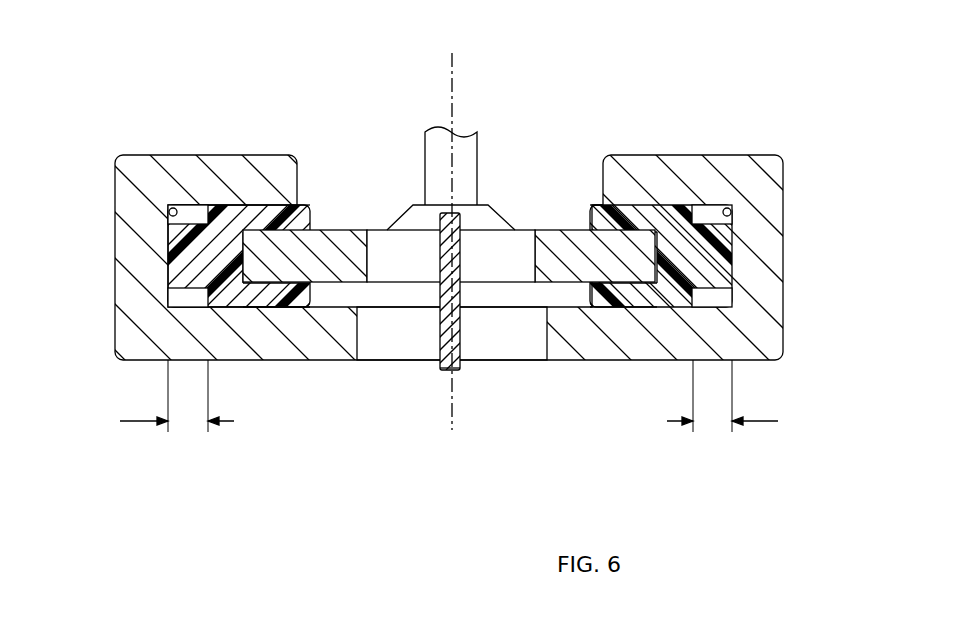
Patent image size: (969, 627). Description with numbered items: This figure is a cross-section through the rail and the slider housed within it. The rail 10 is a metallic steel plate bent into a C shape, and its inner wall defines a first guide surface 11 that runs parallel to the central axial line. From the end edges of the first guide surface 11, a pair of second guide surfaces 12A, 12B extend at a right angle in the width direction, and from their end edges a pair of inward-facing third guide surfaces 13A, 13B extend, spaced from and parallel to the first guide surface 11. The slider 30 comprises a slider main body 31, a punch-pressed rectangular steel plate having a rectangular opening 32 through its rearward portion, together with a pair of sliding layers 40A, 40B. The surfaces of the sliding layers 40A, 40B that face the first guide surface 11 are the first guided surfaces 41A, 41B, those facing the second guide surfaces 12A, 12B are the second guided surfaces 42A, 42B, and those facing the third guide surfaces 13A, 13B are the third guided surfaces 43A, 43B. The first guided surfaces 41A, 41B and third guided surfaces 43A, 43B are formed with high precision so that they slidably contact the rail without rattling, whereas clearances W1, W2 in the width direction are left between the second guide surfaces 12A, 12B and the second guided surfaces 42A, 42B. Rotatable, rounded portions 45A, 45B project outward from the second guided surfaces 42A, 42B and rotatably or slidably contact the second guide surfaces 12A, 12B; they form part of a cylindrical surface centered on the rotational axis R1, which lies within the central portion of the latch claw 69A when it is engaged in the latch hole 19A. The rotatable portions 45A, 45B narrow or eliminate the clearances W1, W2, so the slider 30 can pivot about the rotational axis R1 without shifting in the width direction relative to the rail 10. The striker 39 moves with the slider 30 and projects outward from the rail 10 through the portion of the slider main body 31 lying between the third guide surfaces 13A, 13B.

The rail 10 is at (781, 152).
The first guide surface 11 is at (338, 297).
The second guide surface 12A is at (163, 207).
The second guide surface 12B is at (737, 207).
The third guide surface 13A is at (253, 207).
The third guide surface 13B is at (646, 206).
The latch hole 19A is at (548, 336).
The slider 30 is at (568, 296).
The slider main body 31 is at (558, 247).
The opening 32 is at (370, 258).
The striker 39 is at (461, 122).
The sliding layer 40A is at (311, 200).
The sliding layer 40B is at (590, 200).
The first guided surface 41A is at (270, 307).
The first guided surface 41B is at (625, 307).
The second guided surface 42A is at (200, 301).
The second guided surface 42B is at (700, 301).
The third guided surface 43A is at (244, 207).
The third guided surface 43B is at (674, 206).
The rotatable portion 45A is at (188, 258).
The rotatable portion 45B is at (712, 258).
The latch claw 69A is at (447, 370).
The rotational axis R1 is at (451, 255).
The clearance W1 is at (176, 396).
The clearance W2 is at (722, 396).